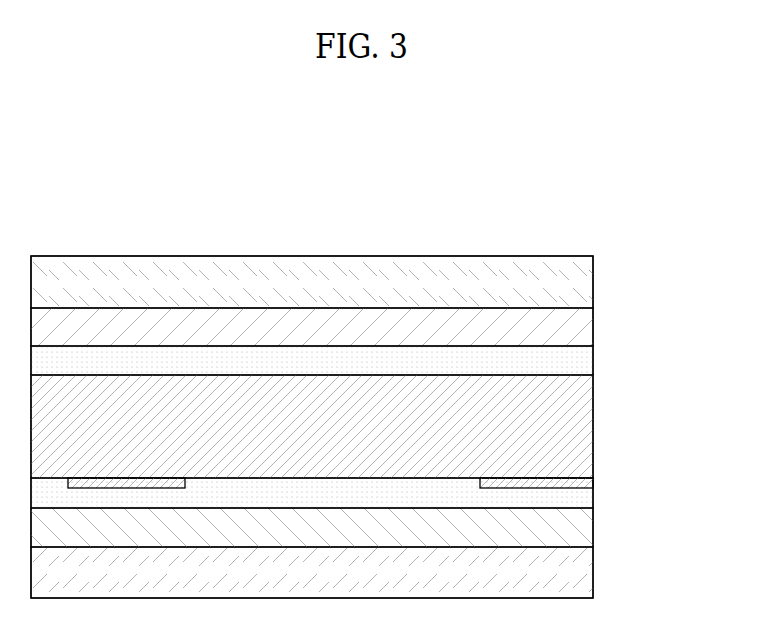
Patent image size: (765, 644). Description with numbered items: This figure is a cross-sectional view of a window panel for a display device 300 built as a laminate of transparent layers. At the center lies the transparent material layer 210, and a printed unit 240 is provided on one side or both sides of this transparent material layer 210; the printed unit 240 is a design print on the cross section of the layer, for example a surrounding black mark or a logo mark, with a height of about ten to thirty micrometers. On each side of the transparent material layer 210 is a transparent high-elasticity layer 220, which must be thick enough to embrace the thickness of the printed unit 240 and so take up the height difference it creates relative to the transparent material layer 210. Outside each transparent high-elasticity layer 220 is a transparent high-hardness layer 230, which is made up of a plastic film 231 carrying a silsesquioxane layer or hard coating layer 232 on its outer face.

The window panel for a display device 300 is at (328, 198).
The transparent high-hardness layer 230 is at (369, 427).
The silsesquioxane layer or hard coating layer 232 is at (575, 284).
The plastic film 231 is at (575, 322).
The transparent high-elasticity layer 220 is at (575, 363).
The transparent material layer 210 is at (575, 430).
The printed unit 240 is at (586, 485).